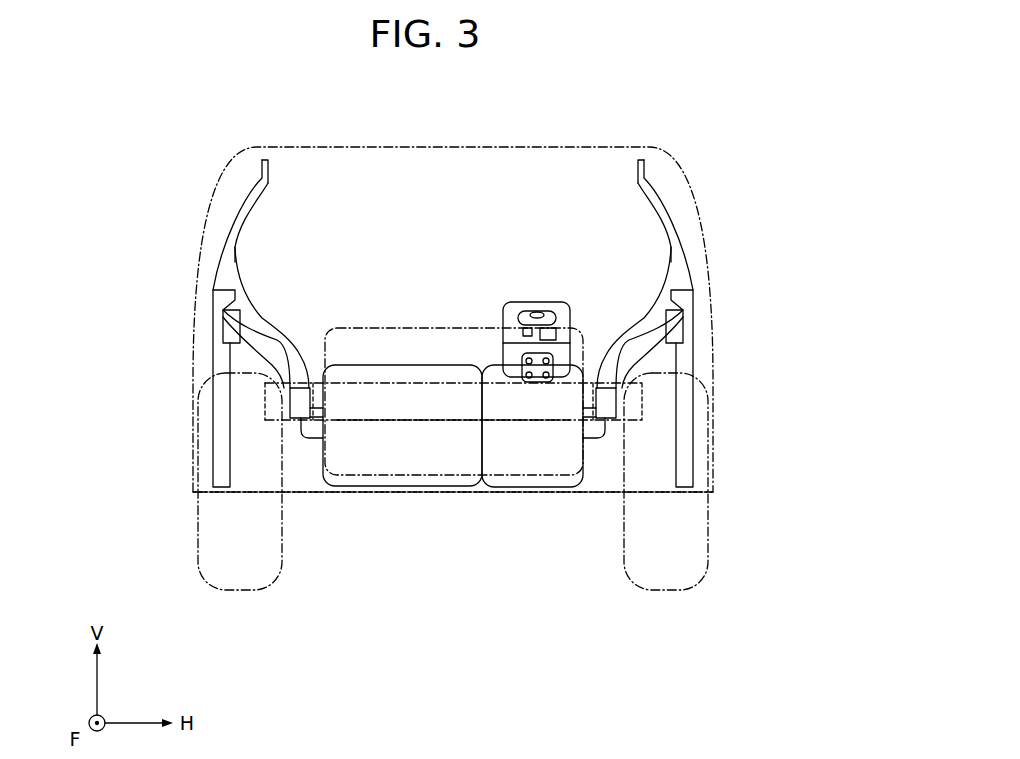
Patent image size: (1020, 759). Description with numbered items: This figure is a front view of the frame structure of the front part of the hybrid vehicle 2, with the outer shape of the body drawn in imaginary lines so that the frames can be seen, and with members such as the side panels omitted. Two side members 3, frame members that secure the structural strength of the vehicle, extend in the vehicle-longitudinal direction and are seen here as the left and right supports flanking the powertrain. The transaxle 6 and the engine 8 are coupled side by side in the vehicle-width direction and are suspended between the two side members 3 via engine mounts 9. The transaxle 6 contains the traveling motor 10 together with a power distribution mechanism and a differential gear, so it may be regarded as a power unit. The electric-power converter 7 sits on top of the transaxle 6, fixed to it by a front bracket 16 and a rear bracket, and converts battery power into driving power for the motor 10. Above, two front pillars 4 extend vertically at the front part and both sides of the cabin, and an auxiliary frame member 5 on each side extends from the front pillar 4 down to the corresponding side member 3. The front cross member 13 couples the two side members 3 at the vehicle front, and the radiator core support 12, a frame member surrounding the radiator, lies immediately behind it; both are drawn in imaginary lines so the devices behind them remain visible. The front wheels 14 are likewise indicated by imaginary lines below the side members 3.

The hybrid vehicle 2 is at (206, 110).
The side member 3 is at (297, 406).
The front pillar 4 is at (217, 350).
The auxiliary frame member 5 is at (291, 347).
The transaxle 6 is at (498, 457).
The electric-power converter 7 is at (525, 302).
The engine 8 is at (578, 345).
The engine mount 9 is at (308, 430).
The traveling motor 10 is at (453, 328).
The radiator core support 12 is at (350, 488).
The front cross member 13 is at (372, 420).
The front wheel 14 is at (247, 592).
The front bracket 16 is at (538, 385).